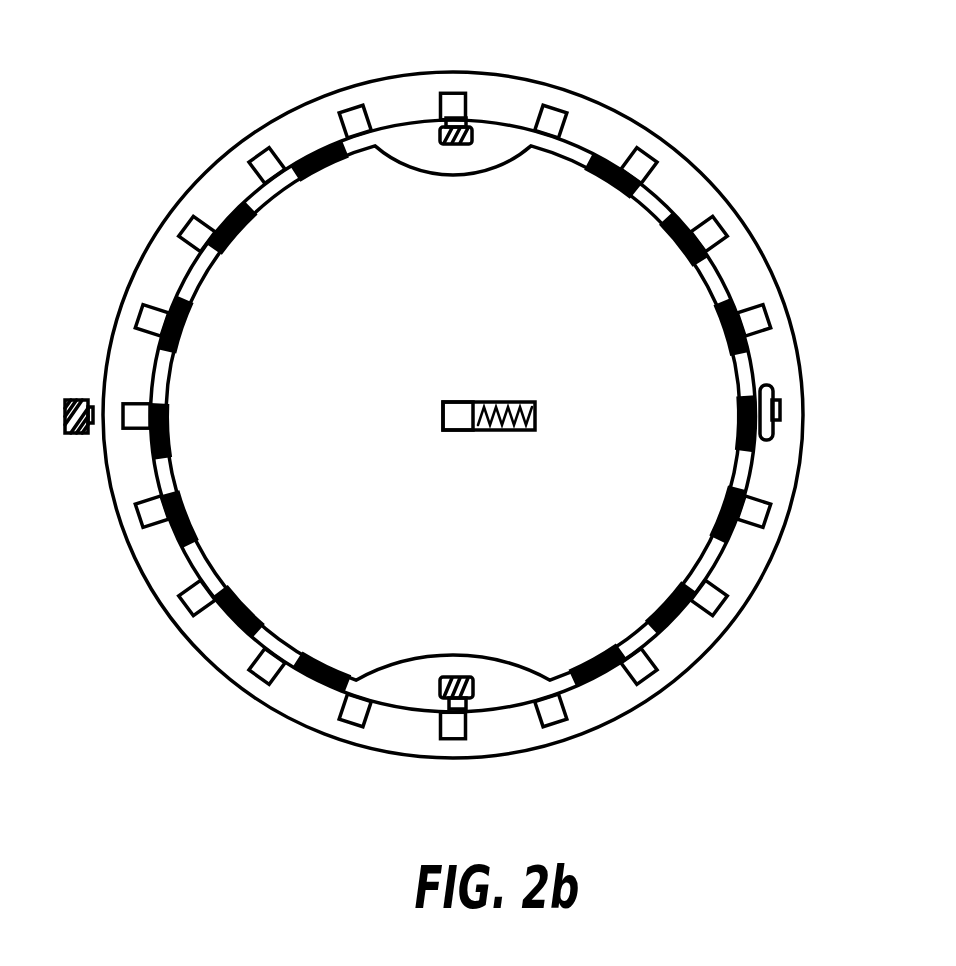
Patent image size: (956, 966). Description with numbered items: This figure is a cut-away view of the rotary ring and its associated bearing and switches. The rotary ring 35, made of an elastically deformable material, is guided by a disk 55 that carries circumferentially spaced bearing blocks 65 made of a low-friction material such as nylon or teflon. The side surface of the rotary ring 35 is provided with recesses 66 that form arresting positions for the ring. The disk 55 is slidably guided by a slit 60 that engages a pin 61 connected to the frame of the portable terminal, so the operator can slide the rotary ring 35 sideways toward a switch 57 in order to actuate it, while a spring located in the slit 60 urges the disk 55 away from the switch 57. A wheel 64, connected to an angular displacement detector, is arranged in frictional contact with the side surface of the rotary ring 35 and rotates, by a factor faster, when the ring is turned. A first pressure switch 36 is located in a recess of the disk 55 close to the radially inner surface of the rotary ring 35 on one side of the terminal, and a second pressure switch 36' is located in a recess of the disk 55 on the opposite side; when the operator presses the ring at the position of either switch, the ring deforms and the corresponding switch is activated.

The rotary ring 35 is at (612, 127).
The disk 55 is at (580, 456).
The bearing blocks 65 is at (737, 300).
The recesses 66 is at (192, 224).
The first pressure switch 36 is at (510, 72).
The second pressure switch 36' is at (486, 641).
The wheel 64 is at (768, 393).
The switch 57 is at (73, 400).
The slit 60 is at (493, 431).
The pin 61 is at (443, 413).